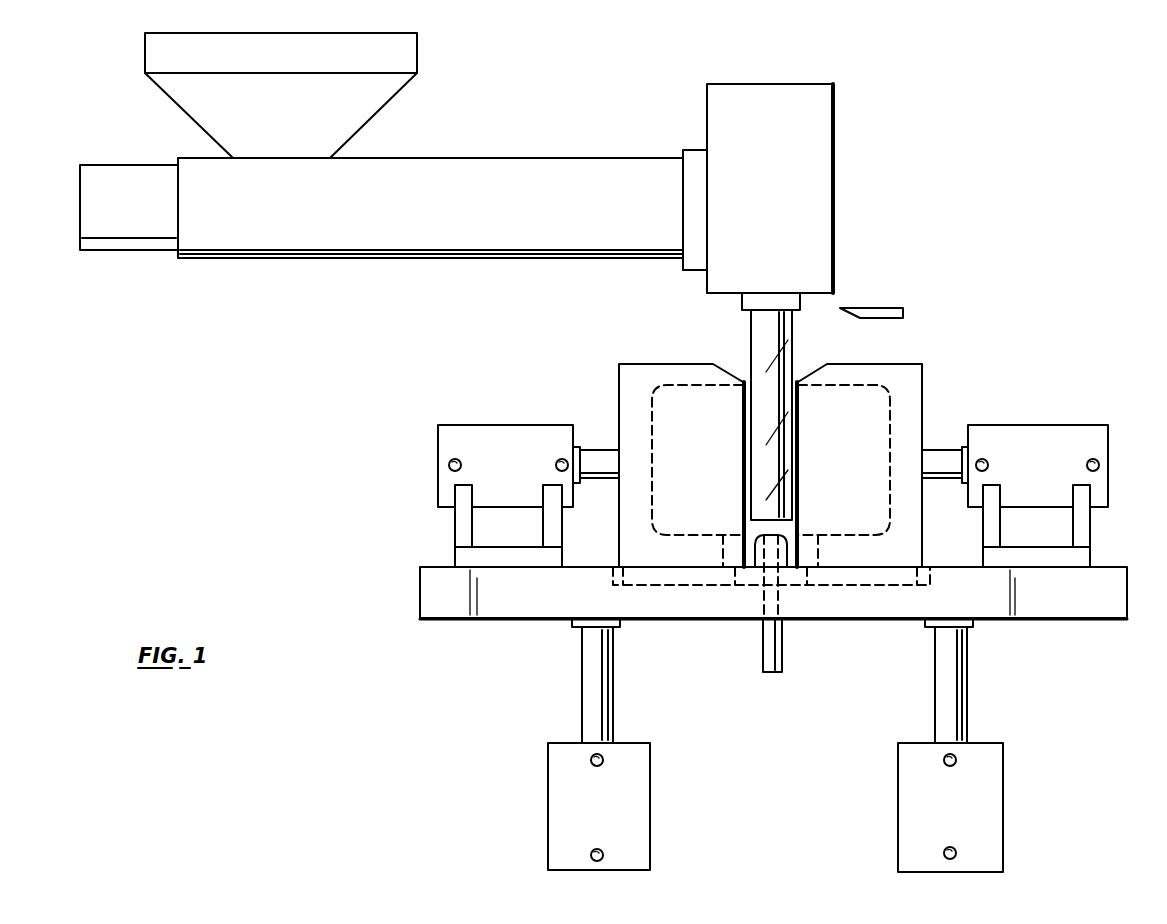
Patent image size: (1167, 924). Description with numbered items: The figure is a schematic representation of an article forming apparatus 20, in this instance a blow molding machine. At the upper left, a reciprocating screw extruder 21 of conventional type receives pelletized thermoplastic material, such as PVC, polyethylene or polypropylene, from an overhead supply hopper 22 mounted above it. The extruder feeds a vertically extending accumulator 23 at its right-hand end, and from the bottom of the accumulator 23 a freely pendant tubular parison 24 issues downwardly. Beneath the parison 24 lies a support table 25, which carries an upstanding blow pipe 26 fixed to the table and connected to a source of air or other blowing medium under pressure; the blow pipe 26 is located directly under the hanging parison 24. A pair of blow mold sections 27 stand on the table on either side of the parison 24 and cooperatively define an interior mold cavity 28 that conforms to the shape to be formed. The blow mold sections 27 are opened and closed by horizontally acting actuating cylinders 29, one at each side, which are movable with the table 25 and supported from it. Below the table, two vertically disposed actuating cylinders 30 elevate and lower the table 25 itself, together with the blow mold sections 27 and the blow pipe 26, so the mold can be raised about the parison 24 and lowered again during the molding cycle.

The article forming apparatus 20 is at (884, 234).
The reciprocating screw extruder 21 is at (280, 265).
The supply hopper 22 is at (300, 108).
The accumulator 23 is at (838, 139).
The tubular parison 24 is at (796, 341).
The support table 25 is at (1112, 612).
The blow pipe 26 is at (758, 542).
The blow mold sections 27 is at (625, 371).
The mold cavity 28 is at (886, 408).
The actuating cylinders 29 is at (458, 435).
The actuating cylinders 30 is at (640, 862).